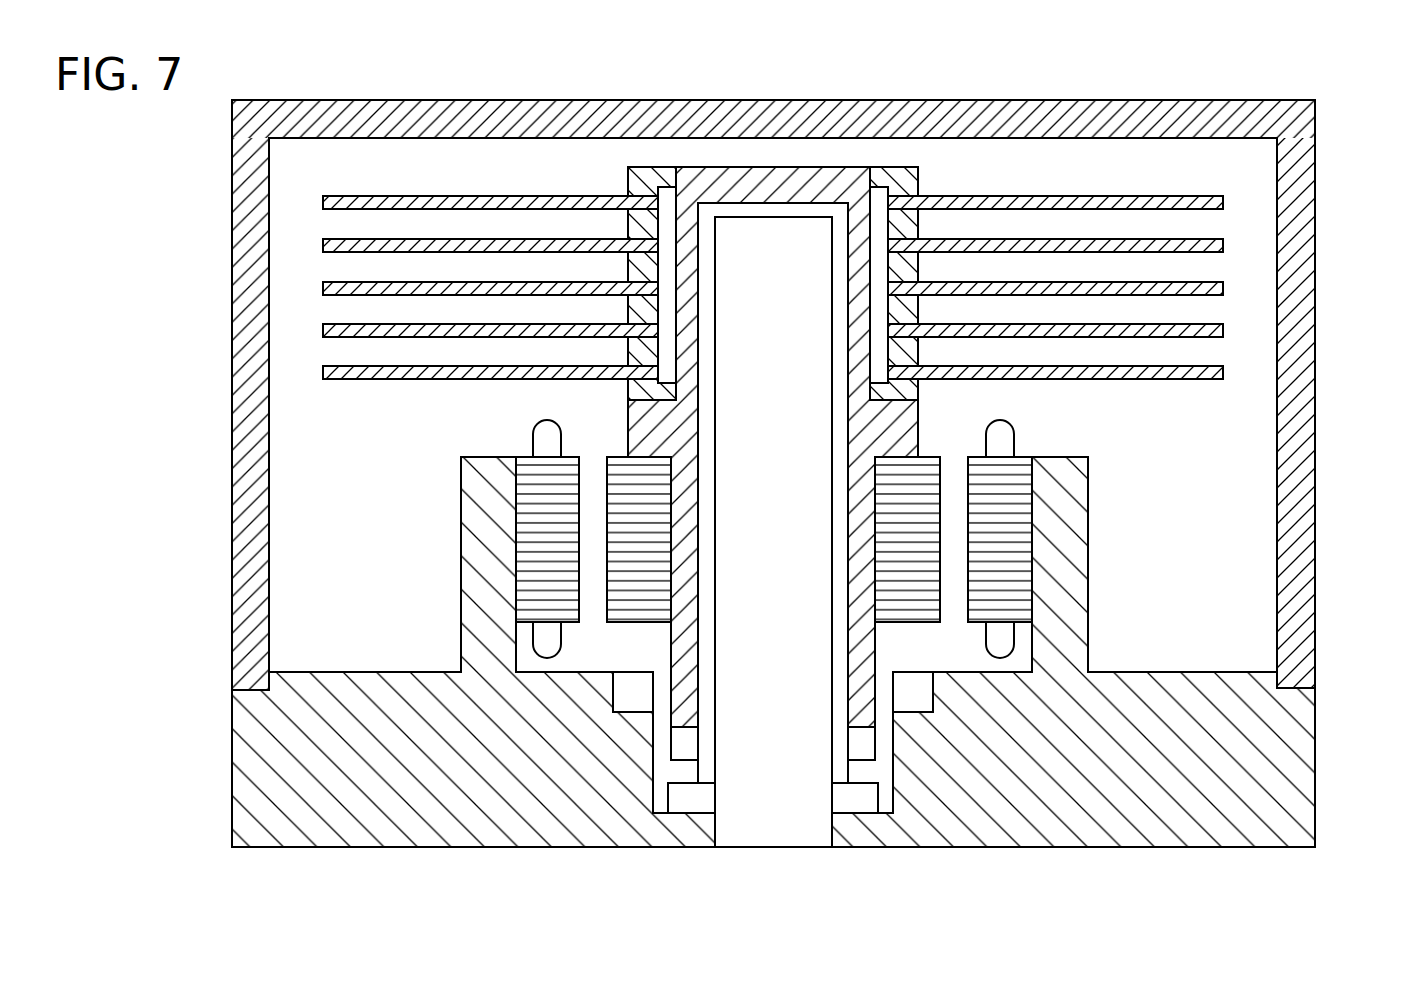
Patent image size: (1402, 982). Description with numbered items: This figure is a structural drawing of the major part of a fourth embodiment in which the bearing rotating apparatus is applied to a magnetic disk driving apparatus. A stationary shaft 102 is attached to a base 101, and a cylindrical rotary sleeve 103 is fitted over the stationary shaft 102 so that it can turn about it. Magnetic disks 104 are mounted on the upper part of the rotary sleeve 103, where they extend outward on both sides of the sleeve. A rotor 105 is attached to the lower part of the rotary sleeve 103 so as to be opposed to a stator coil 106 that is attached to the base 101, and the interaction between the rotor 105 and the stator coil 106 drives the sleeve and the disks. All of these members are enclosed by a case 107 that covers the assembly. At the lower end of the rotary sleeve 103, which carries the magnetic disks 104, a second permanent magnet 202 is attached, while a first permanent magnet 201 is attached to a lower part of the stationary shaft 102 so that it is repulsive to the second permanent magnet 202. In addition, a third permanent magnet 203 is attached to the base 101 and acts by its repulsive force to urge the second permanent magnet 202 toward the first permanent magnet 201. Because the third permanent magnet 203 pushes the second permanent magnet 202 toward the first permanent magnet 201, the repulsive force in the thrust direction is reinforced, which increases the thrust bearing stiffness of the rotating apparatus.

The base 101 is at (1292, 762).
The stationary shaft 102 is at (730, 217).
The rotary sleeve 103 is at (889, 176).
The magnetic disks 104 is at (323, 201).
The rotor 105 is at (925, 490).
The stator coil 106 is at (1013, 568).
The case 107 is at (1302, 596).
The first permanent magnet 201 is at (857, 812).
The second permanent magnet 202 is at (872, 745).
The third permanent magnet 203 is at (928, 693).